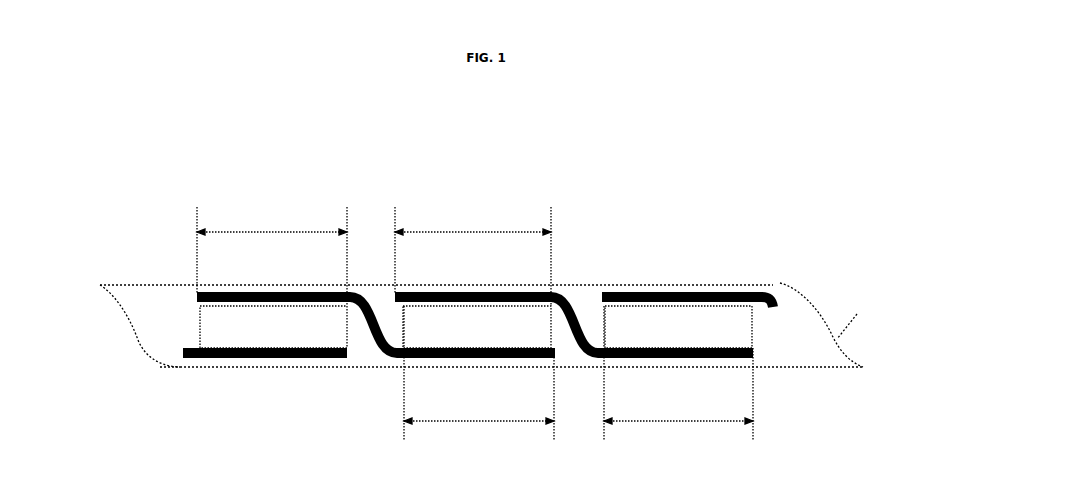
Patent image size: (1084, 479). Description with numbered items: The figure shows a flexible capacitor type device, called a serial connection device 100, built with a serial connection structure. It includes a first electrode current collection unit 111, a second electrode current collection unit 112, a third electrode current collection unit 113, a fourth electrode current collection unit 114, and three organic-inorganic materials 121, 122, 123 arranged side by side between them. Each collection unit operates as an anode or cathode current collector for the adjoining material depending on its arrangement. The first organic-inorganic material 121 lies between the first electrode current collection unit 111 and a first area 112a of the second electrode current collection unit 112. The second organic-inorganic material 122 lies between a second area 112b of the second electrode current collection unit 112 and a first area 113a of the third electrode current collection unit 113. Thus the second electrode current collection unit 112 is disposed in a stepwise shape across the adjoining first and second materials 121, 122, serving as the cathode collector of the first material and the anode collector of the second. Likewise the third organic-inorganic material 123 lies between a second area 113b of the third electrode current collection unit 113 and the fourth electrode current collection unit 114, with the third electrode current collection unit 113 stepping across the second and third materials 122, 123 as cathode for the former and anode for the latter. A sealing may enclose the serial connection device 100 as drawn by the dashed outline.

The serial connection device 100 is at (507, 268).
The first electrode current collection unit 111 is at (184, 352).
The second electrode current collection unit 112 is at (361, 295).
The third electrode current collection unit 113 is at (586, 354).
The fourth electrode current collection unit 114 is at (770, 295).
The first organic-inorganic material 121 is at (273, 327).
The second organic-inorganic material 122 is at (477, 327).
The third organic-inorganic material 123 is at (678, 327).
The first area of the second electrode current collection unit 112a is at (272, 256).
The second area of the second electrode current collection unit 112b is at (479, 373).
The first area of the third electrode current collection unit 113a is at (473, 256).
The second area of the third electrode current collection unit 113b is at (678, 373).